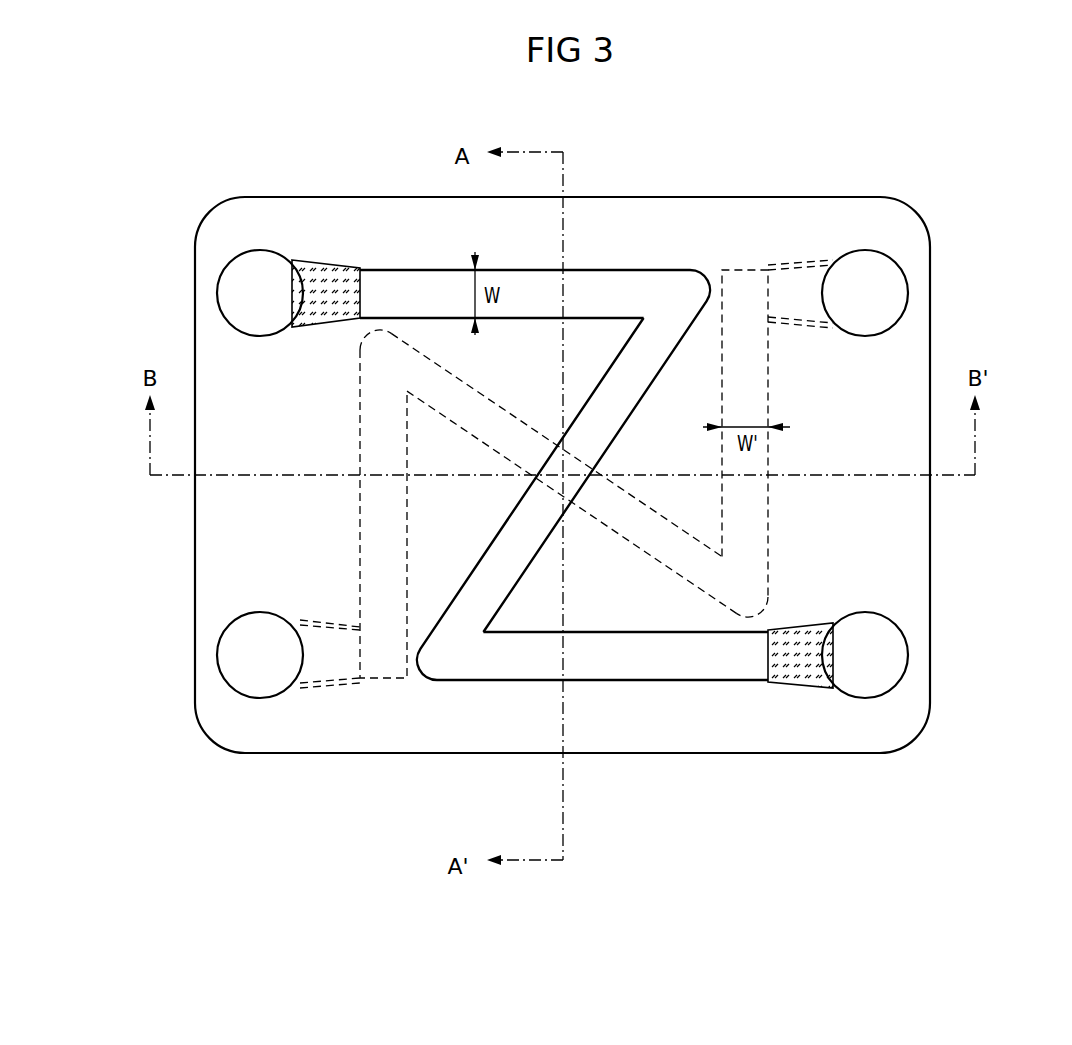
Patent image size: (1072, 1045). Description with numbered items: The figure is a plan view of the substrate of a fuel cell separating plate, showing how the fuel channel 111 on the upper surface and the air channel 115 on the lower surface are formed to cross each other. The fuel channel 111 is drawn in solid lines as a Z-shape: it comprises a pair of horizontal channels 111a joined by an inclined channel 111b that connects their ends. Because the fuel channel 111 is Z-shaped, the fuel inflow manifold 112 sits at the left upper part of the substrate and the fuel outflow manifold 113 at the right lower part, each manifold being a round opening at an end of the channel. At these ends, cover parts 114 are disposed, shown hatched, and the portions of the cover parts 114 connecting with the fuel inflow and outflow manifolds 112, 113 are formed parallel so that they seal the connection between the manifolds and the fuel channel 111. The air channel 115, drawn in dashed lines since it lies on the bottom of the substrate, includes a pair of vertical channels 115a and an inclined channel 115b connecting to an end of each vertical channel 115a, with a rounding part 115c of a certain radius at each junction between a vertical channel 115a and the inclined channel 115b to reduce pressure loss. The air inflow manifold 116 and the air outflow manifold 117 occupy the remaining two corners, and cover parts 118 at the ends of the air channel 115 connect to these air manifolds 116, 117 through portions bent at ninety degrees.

The fuel channel 111 is at (564, 464).
The horizontal channel 111a is at (613, 283).
The inclined channel 111b is at (657, 355).
The fuel inflow manifold 112 is at (224, 266).
The fuel outflow manifold 113 is at (907, 655).
The cover part 114 is at (328, 263).
The air channel 115 is at (554, 539).
The vertical channel 115a is at (360, 518).
The inclined channel 115b is at (478, 446).
The rounding part 115c is at (388, 335).
The air inflow manifold 116 is at (230, 692).
The air outflow manifold 117 is at (907, 292).
The cover part 118 is at (807, 262).